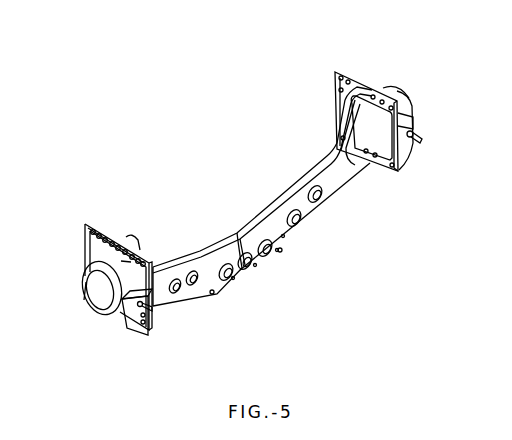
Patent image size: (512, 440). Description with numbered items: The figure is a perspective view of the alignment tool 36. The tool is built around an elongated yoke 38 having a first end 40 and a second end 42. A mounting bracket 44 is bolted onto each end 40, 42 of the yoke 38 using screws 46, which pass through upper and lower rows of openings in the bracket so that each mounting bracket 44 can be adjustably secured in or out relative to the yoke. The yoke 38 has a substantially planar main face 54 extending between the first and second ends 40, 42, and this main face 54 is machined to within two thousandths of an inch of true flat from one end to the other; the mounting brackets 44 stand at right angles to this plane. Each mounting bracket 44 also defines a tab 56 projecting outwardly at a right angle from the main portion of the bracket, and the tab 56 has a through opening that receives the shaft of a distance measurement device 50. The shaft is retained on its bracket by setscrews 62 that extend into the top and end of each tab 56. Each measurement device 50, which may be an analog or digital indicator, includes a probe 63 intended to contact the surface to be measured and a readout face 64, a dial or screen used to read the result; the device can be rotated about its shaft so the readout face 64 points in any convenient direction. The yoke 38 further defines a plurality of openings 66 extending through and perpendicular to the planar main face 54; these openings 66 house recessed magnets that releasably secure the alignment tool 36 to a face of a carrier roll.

The alignment tool 36 is at (219, 190).
The yoke 38 is at (281, 196).
The first end 40 is at (163, 262).
The second end 42 is at (335, 118).
The mounting bracket 44 is at (356, 77).
The screws 46 is at (113, 240).
The distance measurement device 50 is at (400, 90).
The planar main face 54 is at (282, 237).
The tab 56 is at (413, 122).
The setscrews 62 is at (147, 264).
The probe 63 is at (420, 134).
The readout face 64 is at (103, 302).
The openings 66 is at (277, 251).